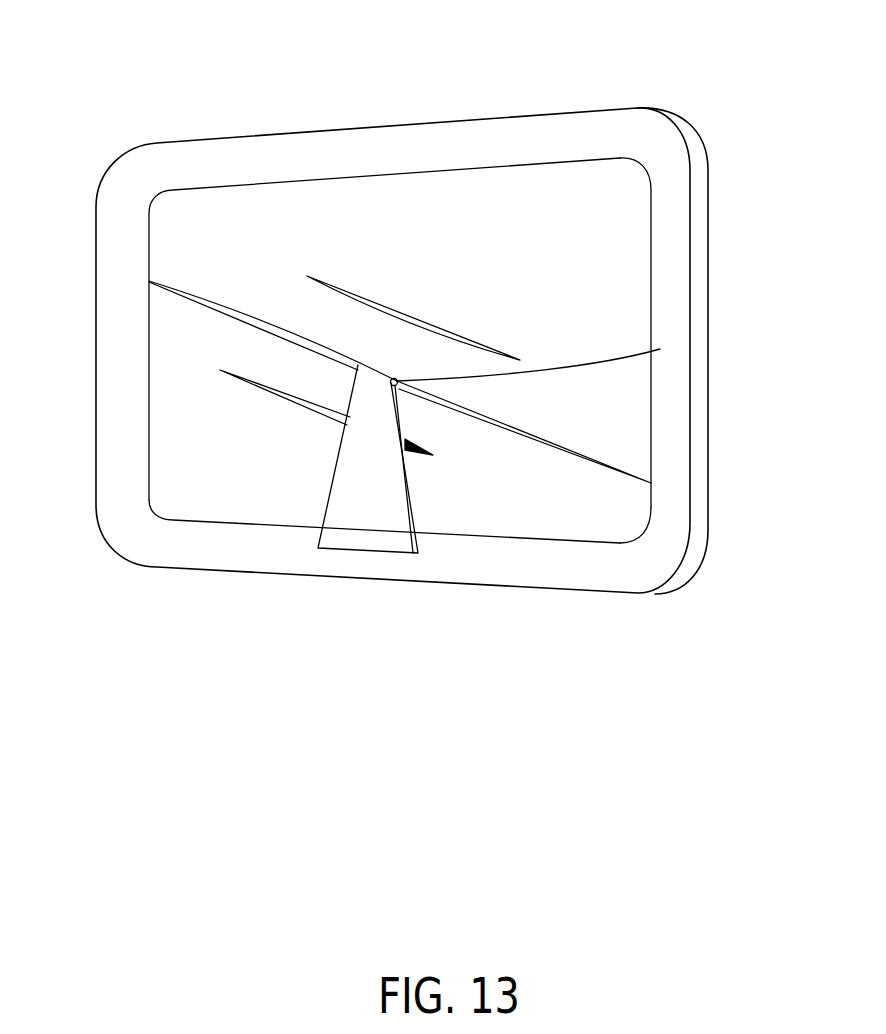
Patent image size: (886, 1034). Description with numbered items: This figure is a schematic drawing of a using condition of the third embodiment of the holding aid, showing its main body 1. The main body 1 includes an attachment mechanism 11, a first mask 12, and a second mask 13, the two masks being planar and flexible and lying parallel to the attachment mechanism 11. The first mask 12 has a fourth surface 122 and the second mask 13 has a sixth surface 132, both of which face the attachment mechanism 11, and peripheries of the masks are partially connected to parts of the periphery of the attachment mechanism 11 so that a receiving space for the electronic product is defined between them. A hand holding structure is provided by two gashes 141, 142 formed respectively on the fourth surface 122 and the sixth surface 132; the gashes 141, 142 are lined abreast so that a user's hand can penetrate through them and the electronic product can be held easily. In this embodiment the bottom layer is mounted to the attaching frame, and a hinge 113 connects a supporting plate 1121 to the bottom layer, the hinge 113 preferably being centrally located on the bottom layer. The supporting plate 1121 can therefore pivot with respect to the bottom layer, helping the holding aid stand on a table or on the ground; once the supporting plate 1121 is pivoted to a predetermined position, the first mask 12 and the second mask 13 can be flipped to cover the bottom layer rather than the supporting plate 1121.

The main body 1 is at (733, 125).
The attachment mechanism 11 is at (205, 158).
The first mask 12 is at (445, 192).
The fourth surface 122 is at (575, 192).
The second mask 13 is at (270, 500).
The sixth surface 132 is at (588, 520).
The hinge 113 is at (660, 349).
The supporting plate 1121 is at (373, 538).
The gash 141 is at (377, 305).
The gash 142 is at (297, 405).